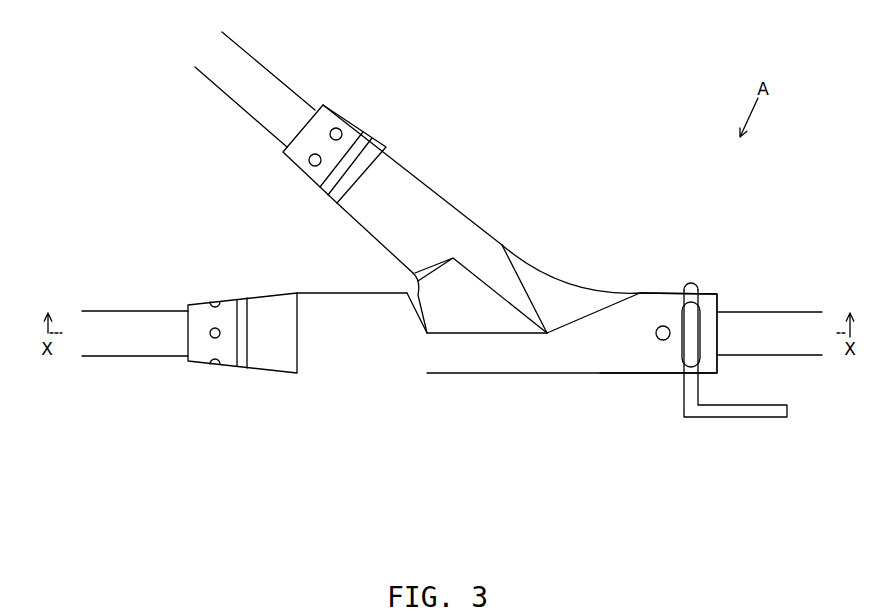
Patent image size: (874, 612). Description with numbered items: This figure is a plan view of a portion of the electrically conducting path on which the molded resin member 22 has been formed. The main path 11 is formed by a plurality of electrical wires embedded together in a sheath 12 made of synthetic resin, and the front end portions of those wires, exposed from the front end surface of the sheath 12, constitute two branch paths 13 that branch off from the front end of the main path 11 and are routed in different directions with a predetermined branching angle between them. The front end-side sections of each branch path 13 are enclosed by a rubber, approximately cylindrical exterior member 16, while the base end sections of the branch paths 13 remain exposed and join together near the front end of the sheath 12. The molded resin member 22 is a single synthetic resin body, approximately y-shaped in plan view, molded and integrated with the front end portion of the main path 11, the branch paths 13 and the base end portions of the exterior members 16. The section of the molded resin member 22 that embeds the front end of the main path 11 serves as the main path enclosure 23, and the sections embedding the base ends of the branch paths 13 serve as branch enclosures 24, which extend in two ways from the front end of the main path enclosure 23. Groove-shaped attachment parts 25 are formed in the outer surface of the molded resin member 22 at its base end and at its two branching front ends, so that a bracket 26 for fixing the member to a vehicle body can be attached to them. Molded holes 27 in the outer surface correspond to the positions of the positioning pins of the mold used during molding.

The main path 11 is at (799, 269).
The sheath 12 is at (755, 320).
The branch path 13 is at (442, 276).
The exterior member 16 is at (258, 78).
The molded resin member 22 is at (560, 293).
The main path enclosure 23 is at (650, 363).
The branch enclosure 24 is at (422, 198).
The attachment part 25 is at (217, 305).
The bracket 26 is at (733, 417).
The molded hole 27 is at (208, 340).